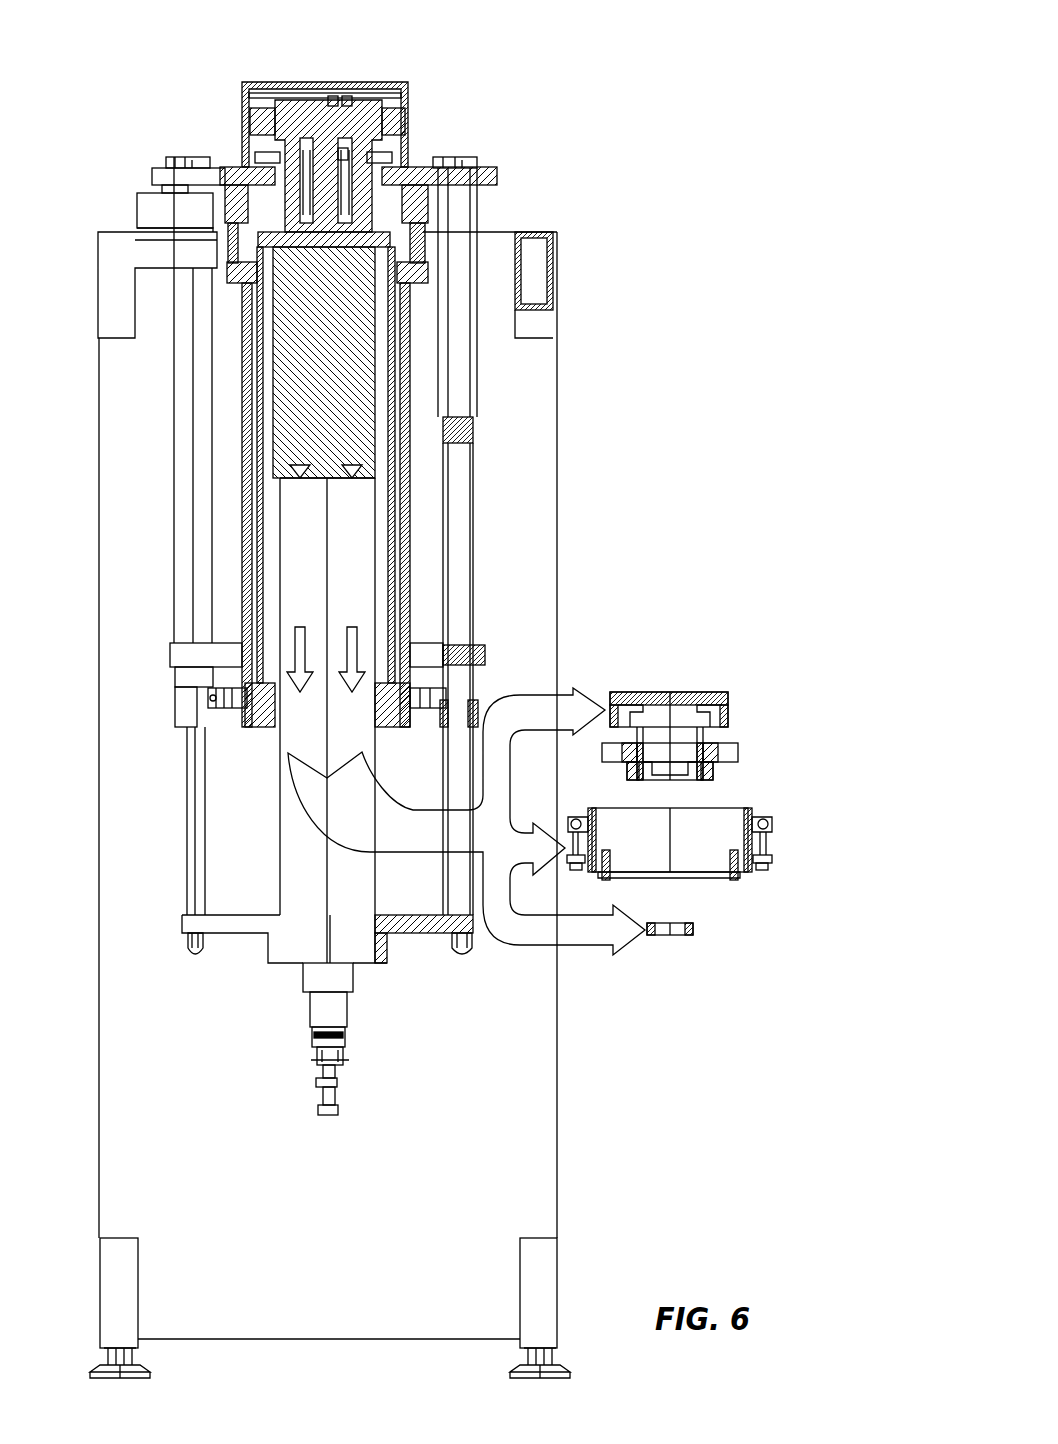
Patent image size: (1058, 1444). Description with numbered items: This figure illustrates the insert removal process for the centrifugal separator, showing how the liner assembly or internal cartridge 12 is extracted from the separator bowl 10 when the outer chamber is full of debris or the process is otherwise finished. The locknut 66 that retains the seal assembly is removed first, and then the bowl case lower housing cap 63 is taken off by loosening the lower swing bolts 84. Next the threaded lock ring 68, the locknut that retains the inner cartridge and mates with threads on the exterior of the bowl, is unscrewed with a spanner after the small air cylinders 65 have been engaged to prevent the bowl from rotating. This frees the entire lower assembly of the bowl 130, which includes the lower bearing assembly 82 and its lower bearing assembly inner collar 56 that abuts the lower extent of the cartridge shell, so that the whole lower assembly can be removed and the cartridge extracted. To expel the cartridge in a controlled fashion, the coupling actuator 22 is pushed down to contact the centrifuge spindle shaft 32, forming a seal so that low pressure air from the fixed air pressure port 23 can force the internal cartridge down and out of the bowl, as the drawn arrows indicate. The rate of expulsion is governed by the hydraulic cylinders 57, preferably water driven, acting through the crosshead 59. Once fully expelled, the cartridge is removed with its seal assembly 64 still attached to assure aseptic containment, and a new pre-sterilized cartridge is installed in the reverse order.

The separator bowl 10 is at (273, 560).
The liner assembly 12 is at (280, 887).
The coupling actuator 22 is at (333, 97).
The fixed air pressure port 23 is at (346, 97).
The centrifuge spindle shaft 32 is at (342, 157).
The lower bearing assembly inner collar 56 is at (633, 740).
The hydraulic cylinders 57 is at (185, 835).
The crosshead 59 is at (243, 937).
The lower housing cap 63 is at (723, 807).
The seal assembly 64 is at (303, 980).
The air cylinders 65 is at (230, 712).
The locknut 66 is at (688, 922).
The threaded lock ring 68 is at (727, 690).
The lower bearing assembly 82 is at (712, 745).
The lower swing bolts 84 is at (770, 847).
The lower assembly of the bowl 130 is at (699, 713).